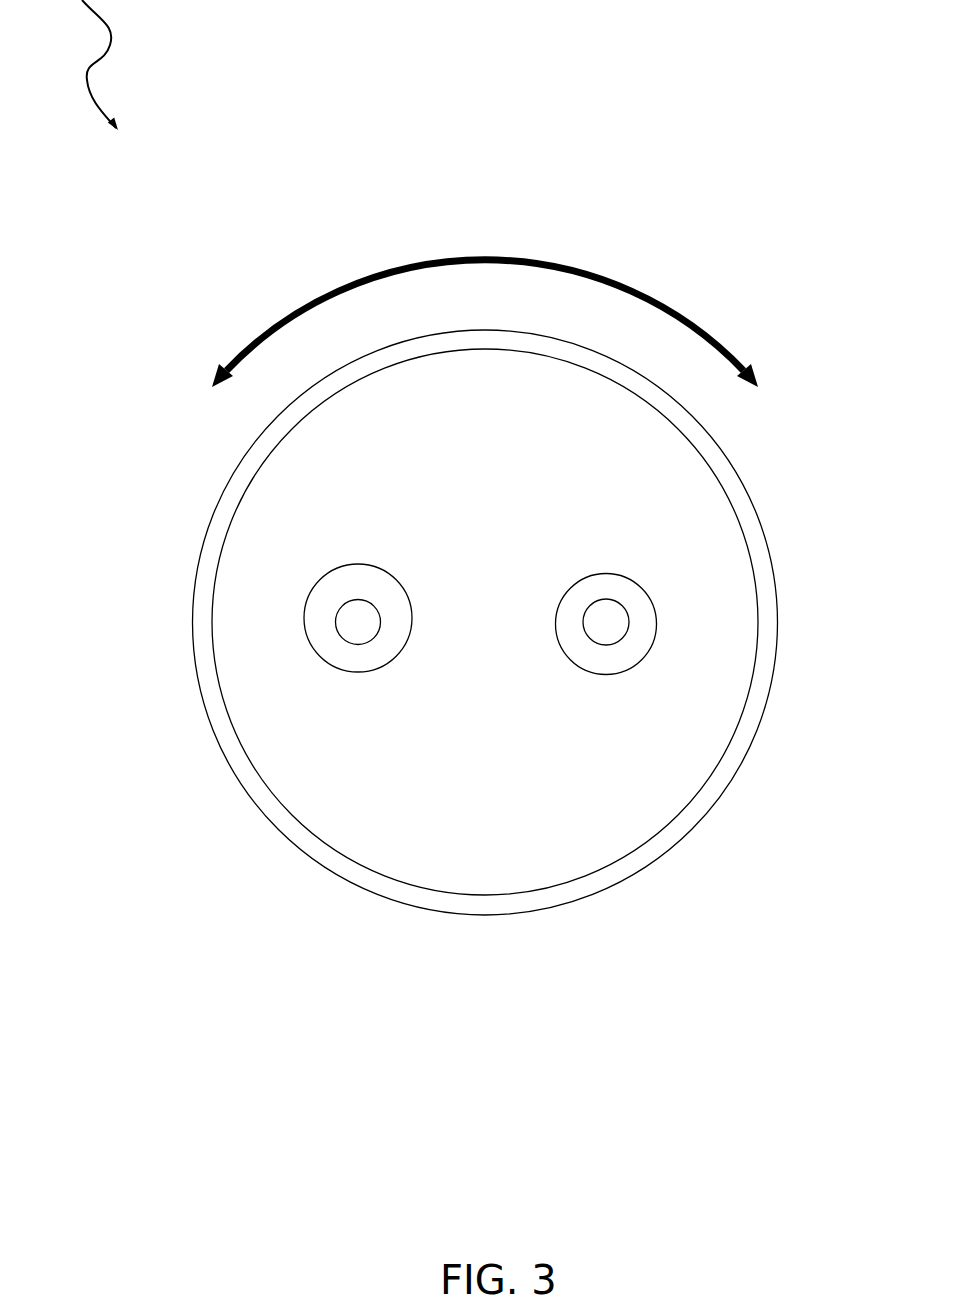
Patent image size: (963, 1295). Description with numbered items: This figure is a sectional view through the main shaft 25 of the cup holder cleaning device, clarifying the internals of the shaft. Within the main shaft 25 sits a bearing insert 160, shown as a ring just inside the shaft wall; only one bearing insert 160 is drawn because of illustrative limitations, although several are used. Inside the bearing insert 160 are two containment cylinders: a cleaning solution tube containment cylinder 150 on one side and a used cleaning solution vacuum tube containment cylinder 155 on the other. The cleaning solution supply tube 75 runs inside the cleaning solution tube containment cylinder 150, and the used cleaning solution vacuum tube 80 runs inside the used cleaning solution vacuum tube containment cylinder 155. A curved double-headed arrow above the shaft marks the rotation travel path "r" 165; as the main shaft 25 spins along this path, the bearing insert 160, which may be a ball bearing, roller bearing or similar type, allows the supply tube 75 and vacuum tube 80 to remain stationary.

The main shaft 25 is at (353, 882).
The bearing insert 160 is at (223, 538).
The cleaning solution tube containment cylinder 150 is at (348, 672).
The cleaning solution supply tube 75 is at (338, 635).
The used cleaning solution vacuum tube containment cylinder 155 is at (648, 657).
The used cleaning solution vacuum tube 80 is at (622, 604).
The rotation travel path "r" 165 is at (540, 261).